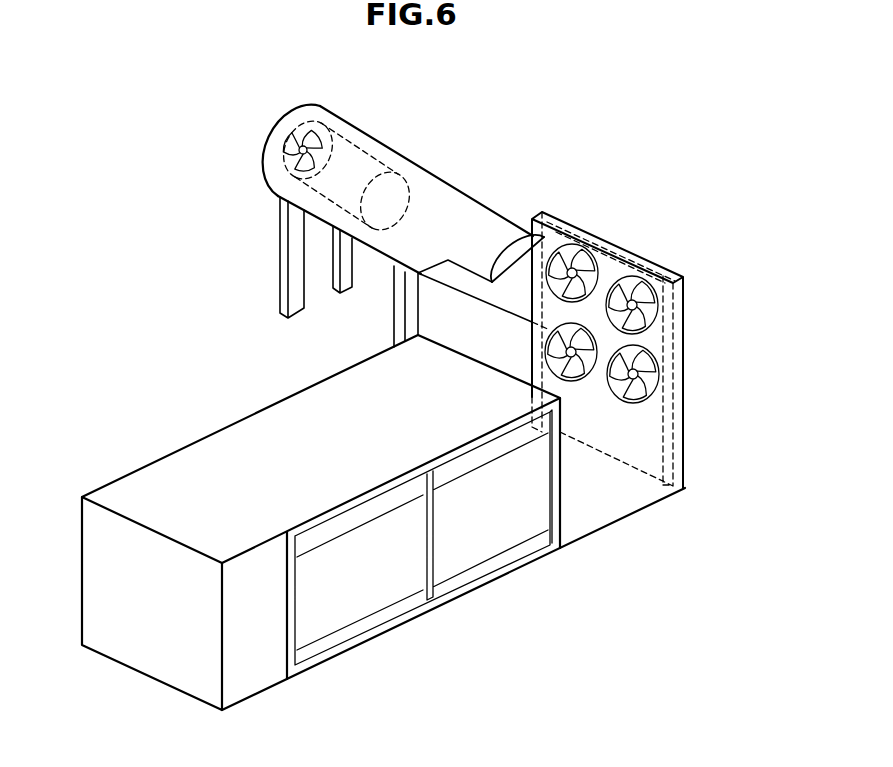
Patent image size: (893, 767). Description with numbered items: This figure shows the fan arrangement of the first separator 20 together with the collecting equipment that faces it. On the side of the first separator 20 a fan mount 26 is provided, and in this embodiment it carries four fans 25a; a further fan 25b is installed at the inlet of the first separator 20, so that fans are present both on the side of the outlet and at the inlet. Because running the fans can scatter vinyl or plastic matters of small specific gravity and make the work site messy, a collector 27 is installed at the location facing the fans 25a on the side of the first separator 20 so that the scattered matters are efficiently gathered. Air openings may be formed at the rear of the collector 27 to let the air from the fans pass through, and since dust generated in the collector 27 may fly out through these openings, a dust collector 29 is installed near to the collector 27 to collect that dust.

The first separator 20 is at (452, 202).
The fans 25a is at (657, 313).
The fan 25b is at (301, 142).
The fan mount 26 is at (600, 247).
The collector 27 is at (282, 428).
The dust collector 29 is at (140, 494).